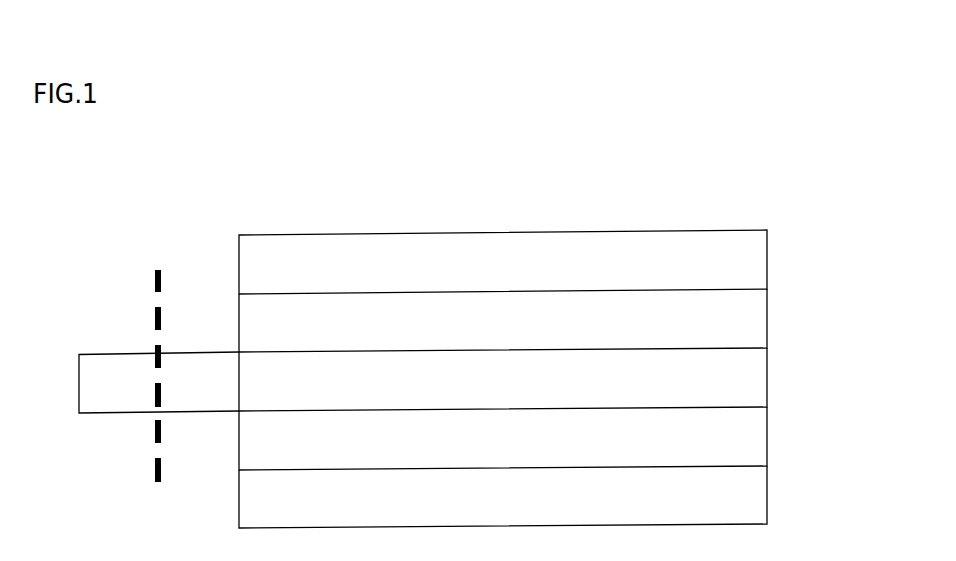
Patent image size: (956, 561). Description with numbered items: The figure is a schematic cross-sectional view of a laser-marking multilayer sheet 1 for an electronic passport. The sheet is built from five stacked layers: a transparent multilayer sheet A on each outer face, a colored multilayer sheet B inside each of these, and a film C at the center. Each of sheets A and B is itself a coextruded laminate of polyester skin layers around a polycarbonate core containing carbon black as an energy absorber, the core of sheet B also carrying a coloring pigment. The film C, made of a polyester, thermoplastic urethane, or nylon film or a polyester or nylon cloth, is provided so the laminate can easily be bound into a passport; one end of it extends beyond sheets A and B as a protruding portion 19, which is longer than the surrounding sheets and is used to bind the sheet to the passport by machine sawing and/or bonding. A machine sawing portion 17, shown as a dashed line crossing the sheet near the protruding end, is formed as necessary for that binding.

The laser-marking multilayer sheet 1 is at (586, 212).
The film C is at (760, 382).
The machine sawing portion 17 is at (157, 463).
The protruding portion 19 is at (110, 362).